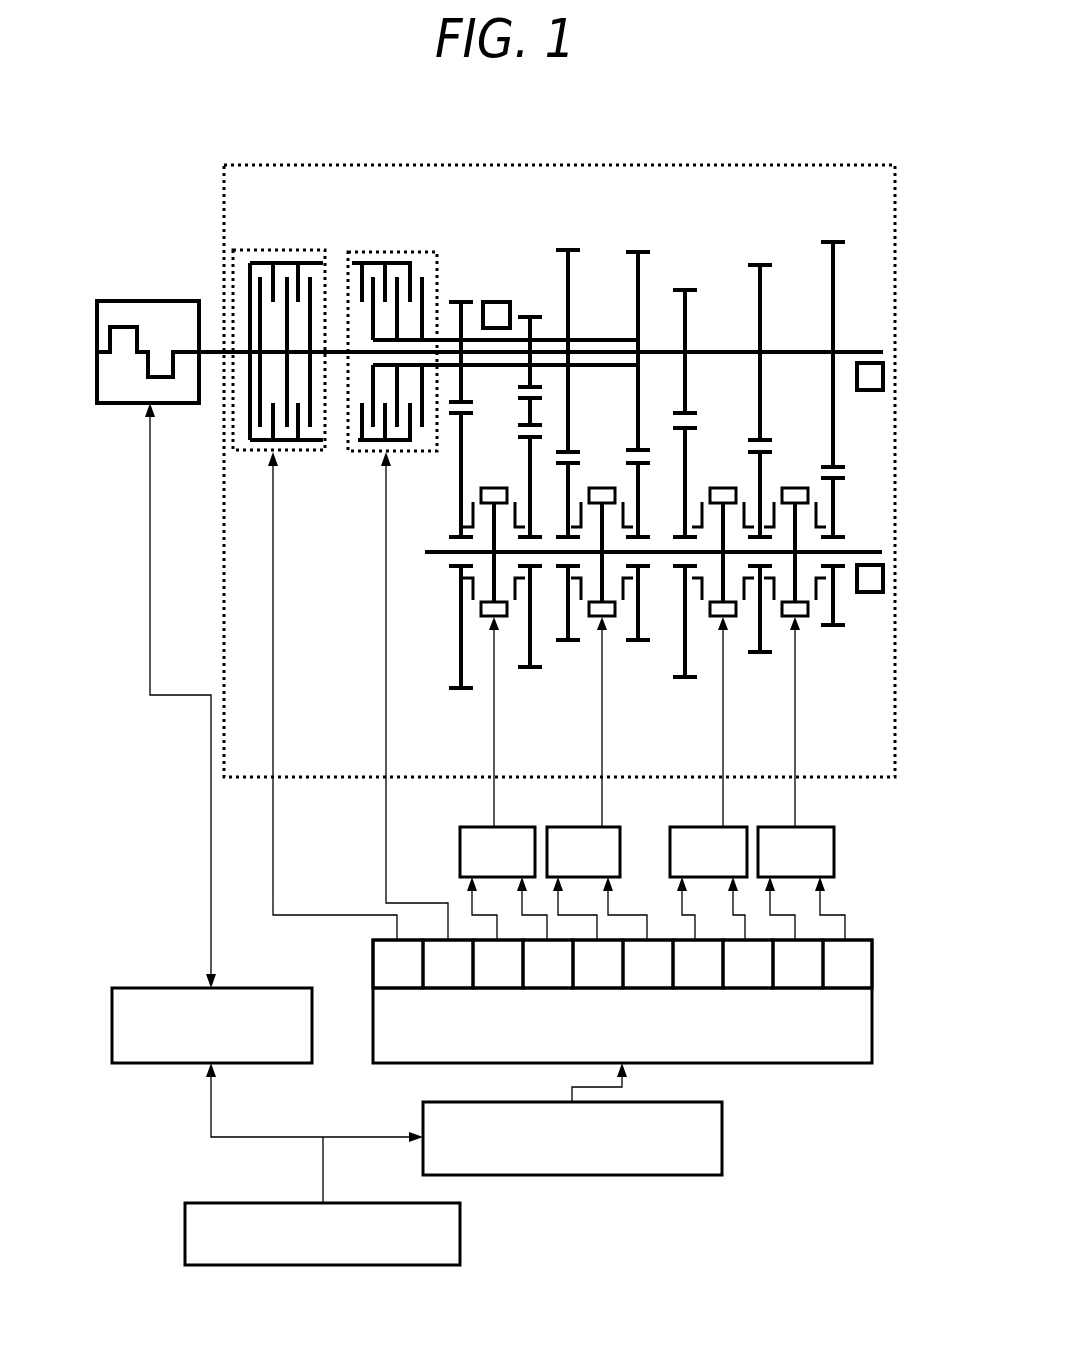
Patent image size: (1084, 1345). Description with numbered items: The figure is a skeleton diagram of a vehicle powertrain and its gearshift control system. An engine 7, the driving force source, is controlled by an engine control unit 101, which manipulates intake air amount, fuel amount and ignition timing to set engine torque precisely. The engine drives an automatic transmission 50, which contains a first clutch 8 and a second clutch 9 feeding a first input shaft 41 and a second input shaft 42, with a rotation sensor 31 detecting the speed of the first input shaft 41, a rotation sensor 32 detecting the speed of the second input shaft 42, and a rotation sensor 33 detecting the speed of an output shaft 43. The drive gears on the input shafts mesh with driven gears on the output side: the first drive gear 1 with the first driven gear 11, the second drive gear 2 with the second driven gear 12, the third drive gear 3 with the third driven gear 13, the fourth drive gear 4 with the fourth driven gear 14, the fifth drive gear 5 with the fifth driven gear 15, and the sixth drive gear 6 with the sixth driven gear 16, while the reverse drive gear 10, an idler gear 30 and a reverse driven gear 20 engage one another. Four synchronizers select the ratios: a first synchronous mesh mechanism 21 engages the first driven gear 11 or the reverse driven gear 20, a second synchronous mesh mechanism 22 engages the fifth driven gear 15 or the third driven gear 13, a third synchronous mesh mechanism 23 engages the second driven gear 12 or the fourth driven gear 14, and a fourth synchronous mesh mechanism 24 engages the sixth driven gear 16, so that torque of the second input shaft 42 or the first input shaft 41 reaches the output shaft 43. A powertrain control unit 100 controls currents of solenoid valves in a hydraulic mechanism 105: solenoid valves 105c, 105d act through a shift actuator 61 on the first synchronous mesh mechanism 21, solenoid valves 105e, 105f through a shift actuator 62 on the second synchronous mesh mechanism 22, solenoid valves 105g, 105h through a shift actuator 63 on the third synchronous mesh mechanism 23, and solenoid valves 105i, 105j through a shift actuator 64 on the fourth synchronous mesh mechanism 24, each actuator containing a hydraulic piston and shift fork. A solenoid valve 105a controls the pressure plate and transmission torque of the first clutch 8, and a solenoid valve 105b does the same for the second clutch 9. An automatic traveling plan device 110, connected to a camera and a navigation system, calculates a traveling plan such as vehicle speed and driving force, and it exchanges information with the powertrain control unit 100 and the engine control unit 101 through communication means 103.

The first drive gear 1 is at (460, 300).
The second drive gear 2 is at (685, 288).
The third drive gear 3 is at (640, 250).
The fourth drive gear 4 is at (760, 263).
The fifth drive gear 5 is at (568, 248).
The sixth drive gear 6 is at (832, 240).
The engine 7 is at (150, 298).
The first clutch 8 is at (272, 250).
The second clutch 9 is at (385, 250).
The reverse drive gear 10 is at (530, 315).
The first driven gear 11 is at (458, 692).
The second driven gear 12 is at (685, 680).
The third driven gear 13 is at (638, 643).
The fourth driven gear 14 is at (759, 655).
The fifth driven gear 15 is at (568, 643).
The sixth driven gear 16 is at (832, 628).
The reverse driven gear 20 is at (530, 670).
The first synchronous mesh mechanism 21 is at (485, 487).
The second synchronous mesh mechanism 22 is at (598, 487).
The third synchronous mesh mechanism 23 is at (722, 487).
The fourth synchronous mesh mechanism 24 is at (795, 487).
The idler gear 30 is at (518, 404).
The rotation sensor 31 is at (870, 390).
The rotation sensor 32 is at (497, 302).
The rotation sensor 33 is at (870, 592).
The first input shaft 41 is at (862, 350).
The second input shaft 42 is at (602, 338).
The output shaft 43 is at (855, 550).
The automatic transmission 50 is at (579, 158).
The shift actuator 61 is at (503, 883).
The shift actuator 62 is at (597, 883).
The shift actuator 63 is at (708, 883).
The shift actuator 64 is at (801, 883).
The powertrain control unit 100 is at (722, 1125).
The engine control unit 101 is at (173, 987).
The communication means 103 is at (248, 1138).
The hydraulic mechanism 105 is at (574, 774).
The solenoid valve 105a is at (398, 964).
The solenoid valve 105b is at (448, 964).
The solenoid valve 105c is at (498, 964).
The solenoid valve 105d is at (548, 964).
The solenoid valve 105e is at (598, 964).
The solenoid valve 105f is at (648, 964).
The solenoid valve 105g is at (698, 964).
The solenoid valve 105h is at (748, 964).
The solenoid valve 105i is at (798, 964).
The solenoid valve 105j is at (847, 964).
The automatic traveling plan device 110 is at (460, 1250).